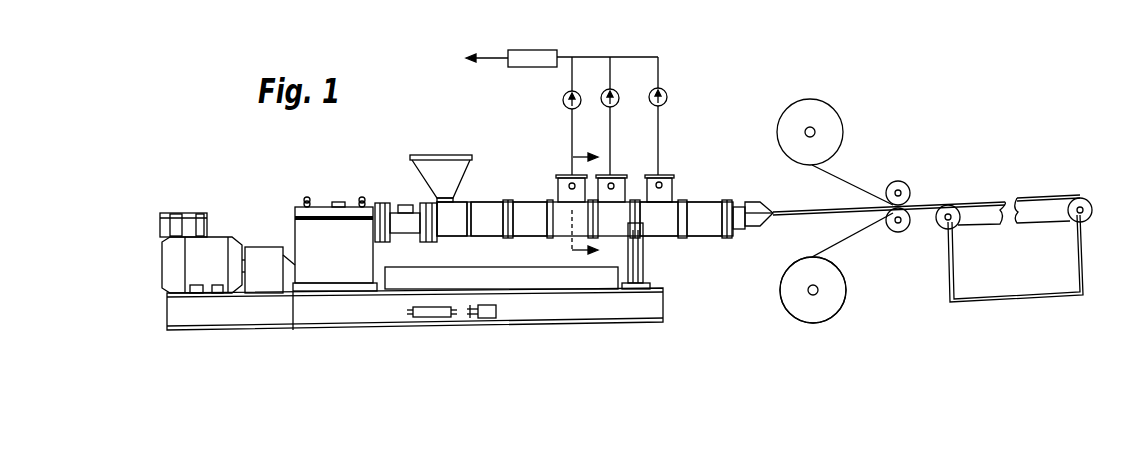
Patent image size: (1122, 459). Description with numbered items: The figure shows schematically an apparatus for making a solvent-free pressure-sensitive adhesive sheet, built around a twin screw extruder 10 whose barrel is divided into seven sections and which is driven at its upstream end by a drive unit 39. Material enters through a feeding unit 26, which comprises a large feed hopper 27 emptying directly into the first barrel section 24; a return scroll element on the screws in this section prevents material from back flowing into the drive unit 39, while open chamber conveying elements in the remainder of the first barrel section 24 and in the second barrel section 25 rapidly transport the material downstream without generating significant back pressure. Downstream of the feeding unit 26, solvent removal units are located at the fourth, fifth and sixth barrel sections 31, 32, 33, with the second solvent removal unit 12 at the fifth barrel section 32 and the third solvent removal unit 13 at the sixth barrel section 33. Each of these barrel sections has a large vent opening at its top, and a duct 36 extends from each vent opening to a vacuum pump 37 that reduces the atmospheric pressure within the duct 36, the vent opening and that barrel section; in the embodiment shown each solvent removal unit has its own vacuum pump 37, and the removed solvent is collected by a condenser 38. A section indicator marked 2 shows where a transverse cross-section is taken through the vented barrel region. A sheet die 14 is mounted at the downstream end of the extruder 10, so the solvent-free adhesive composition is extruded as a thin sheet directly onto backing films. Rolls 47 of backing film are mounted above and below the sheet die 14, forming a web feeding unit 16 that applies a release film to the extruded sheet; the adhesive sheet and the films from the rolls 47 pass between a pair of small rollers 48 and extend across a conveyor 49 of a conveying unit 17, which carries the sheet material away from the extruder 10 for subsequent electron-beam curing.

The twin screw extruder 10 is at (298, 181).
The drive unit 39 is at (356, 200).
The feeding unit 26 is at (466, 153).
The feed hopper 27 is at (432, 164).
The first barrel section 24 is at (458, 212).
The second barrel section 25 is at (480, 230).
The fourth barrel section 31 is at (560, 225).
The fifth barrel section 32 is at (610, 225).
The sixth barrel section 33 is at (657, 227).
The section line 2- 2 is at (590, 198).
The duct 36 is at (573, 122).
The vacuum pump 37 is at (582, 92).
The condenser 38 is at (542, 46).
The second solvent removal unit 12 is at (623, 169).
The third solvent removal unit 13 is at (663, 167).
The sheet die 14 is at (756, 198).
The rolls of backing film 47 is at (838, 126).
The small rollers 48 is at (904, 186).
The conveyor 49 is at (980, 218).
The conveying unit 17 is at (933, 291).
The web feeding unit 16 is at (846, 296).